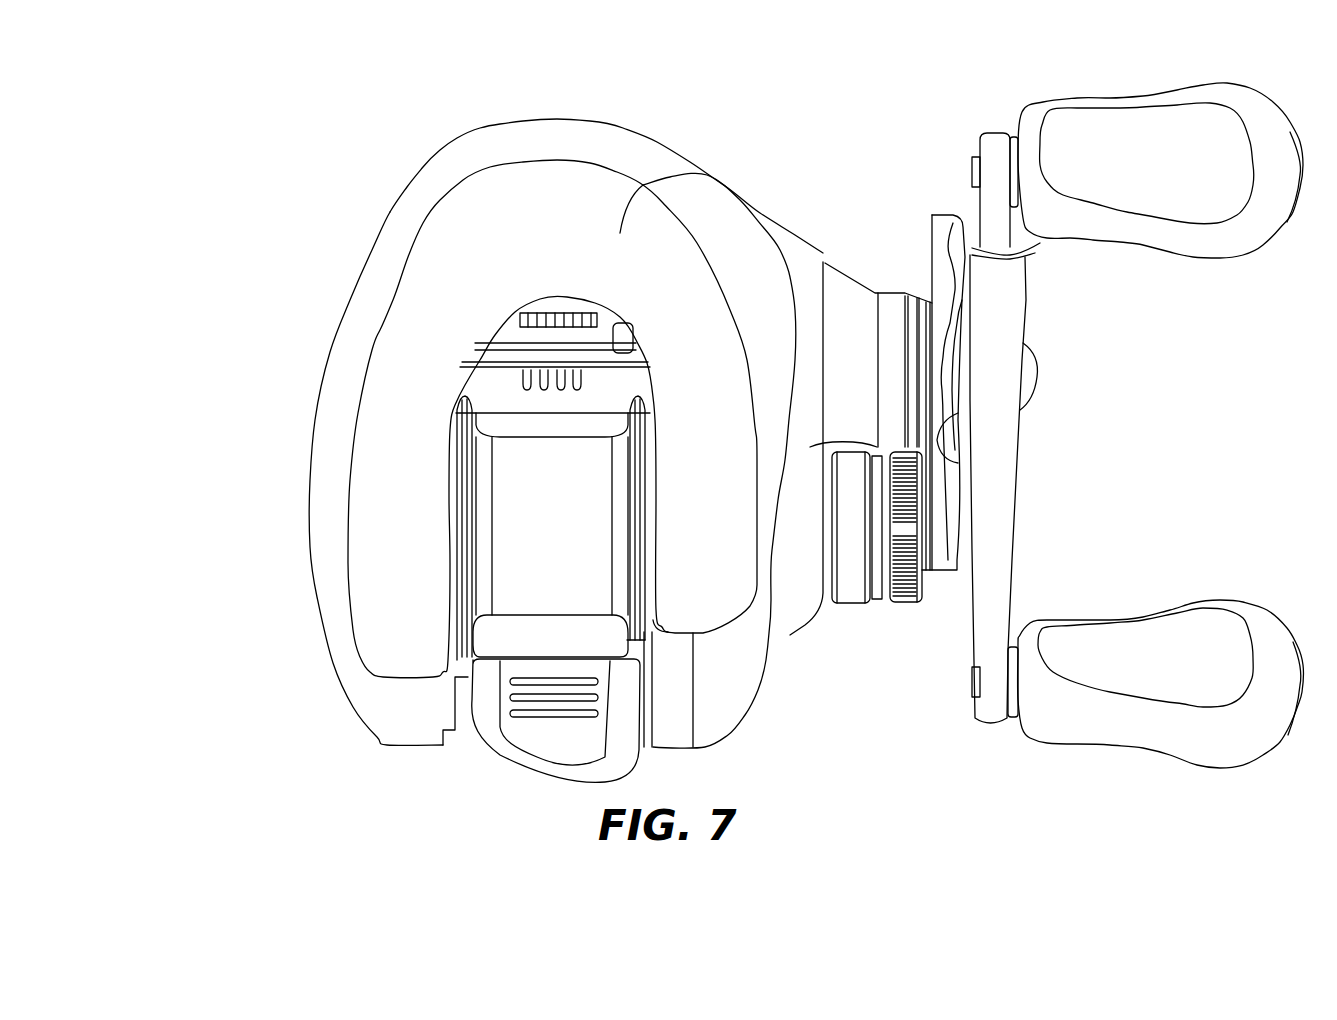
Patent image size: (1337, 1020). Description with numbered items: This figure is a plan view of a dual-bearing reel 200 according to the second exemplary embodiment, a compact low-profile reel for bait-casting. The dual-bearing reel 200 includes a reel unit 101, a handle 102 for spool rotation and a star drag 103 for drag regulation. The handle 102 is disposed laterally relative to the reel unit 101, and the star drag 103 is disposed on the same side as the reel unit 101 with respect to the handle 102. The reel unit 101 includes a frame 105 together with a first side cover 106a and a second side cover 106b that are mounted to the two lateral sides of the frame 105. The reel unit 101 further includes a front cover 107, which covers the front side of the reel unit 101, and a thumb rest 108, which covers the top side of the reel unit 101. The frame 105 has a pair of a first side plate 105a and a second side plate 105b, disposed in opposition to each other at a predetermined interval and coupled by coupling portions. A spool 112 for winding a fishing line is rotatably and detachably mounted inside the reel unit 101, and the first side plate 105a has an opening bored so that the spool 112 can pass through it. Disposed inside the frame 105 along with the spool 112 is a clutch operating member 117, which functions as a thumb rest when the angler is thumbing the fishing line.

The dual-bearing reel 200 is at (330, 188).
The reel unit 101 is at (393, 180).
The handle 102 is at (1027, 307).
The star drag 103 is at (943, 217).
The frame 105 is at (445, 490).
The first side plate 105a is at (447, 417).
The second side plate 105b is at (655, 385).
The first side cover 106a is at (328, 362).
The second side cover 106b is at (752, 668).
The front cover 107 is at (508, 148).
The thumb rest 108 is at (707, 175).
The spool 112 is at (537, 558).
The clutch operating member 117 is at (490, 727).